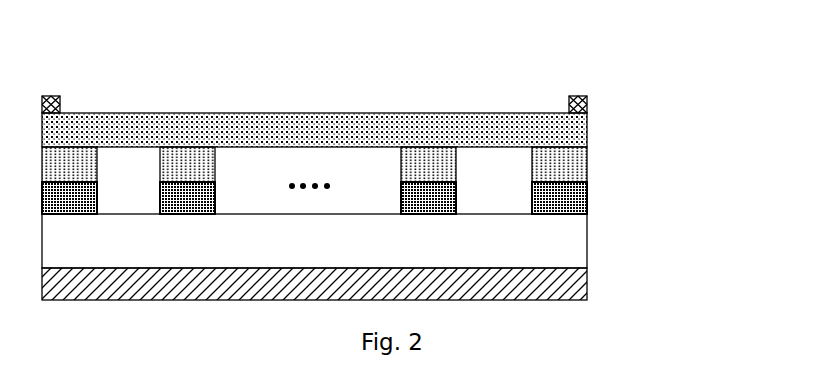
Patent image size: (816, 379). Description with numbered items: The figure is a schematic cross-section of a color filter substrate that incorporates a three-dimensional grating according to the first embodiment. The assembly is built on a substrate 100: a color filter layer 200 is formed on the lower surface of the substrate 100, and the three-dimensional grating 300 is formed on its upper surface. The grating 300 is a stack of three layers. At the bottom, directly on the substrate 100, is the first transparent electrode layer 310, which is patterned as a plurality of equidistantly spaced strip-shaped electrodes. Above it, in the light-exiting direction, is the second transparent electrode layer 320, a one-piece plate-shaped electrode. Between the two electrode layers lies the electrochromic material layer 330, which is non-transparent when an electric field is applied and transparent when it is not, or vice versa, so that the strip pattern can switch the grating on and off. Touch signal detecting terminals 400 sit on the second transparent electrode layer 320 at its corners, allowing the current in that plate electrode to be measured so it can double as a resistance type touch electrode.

The substrate 100 is at (568, 247).
The color filter layer 200 is at (572, 288).
The 3D grating 300 is at (348, 113).
The first transparent electrode layer 310 is at (402, 183).
The second transparent electrode layer 320 is at (466, 135).
The electrochromic material layer 330 is at (450, 157).
The touch signal detecting terminal 400 is at (55, 97).